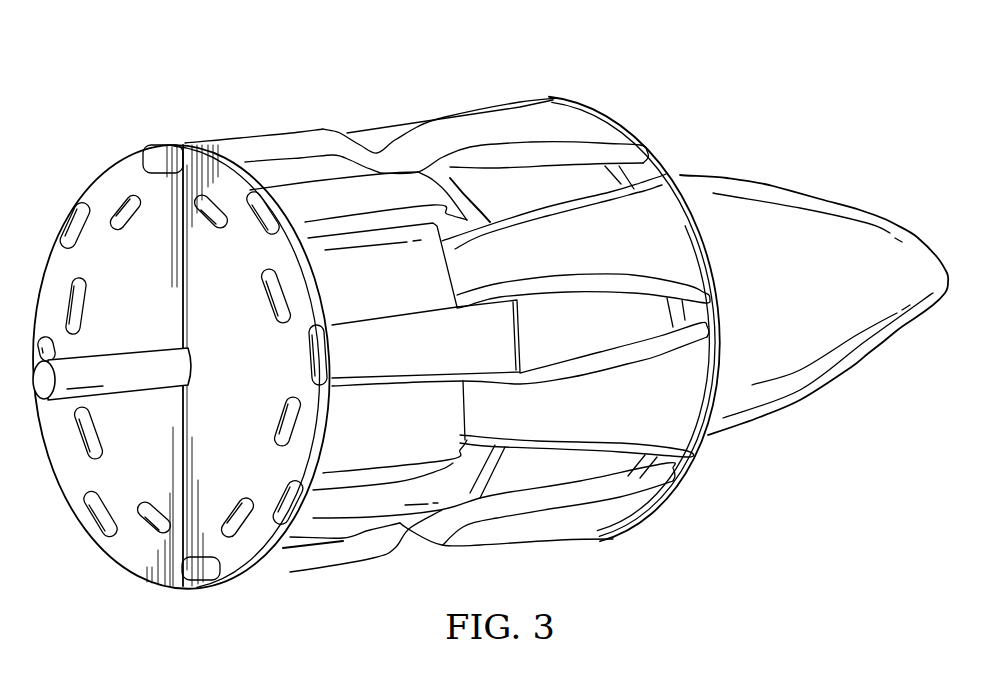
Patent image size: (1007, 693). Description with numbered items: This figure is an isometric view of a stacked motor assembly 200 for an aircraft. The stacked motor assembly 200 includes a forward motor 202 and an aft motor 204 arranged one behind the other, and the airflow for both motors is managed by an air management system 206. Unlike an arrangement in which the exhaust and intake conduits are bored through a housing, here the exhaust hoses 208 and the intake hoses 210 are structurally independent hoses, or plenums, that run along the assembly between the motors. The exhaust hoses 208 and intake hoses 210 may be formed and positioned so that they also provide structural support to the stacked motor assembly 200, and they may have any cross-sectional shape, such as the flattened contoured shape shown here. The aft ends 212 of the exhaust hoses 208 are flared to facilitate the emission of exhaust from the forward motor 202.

The stacked motor assembly 200 is at (322, 66).
The forward motor 202 is at (287, 173).
The aft motor 204 is at (487, 177).
The air management system 206 is at (550, 131).
The exhaust hoses 208 is at (667, 207).
The intake hoses 210 is at (393, 497).
The aft ends 212 is at (593, 127).